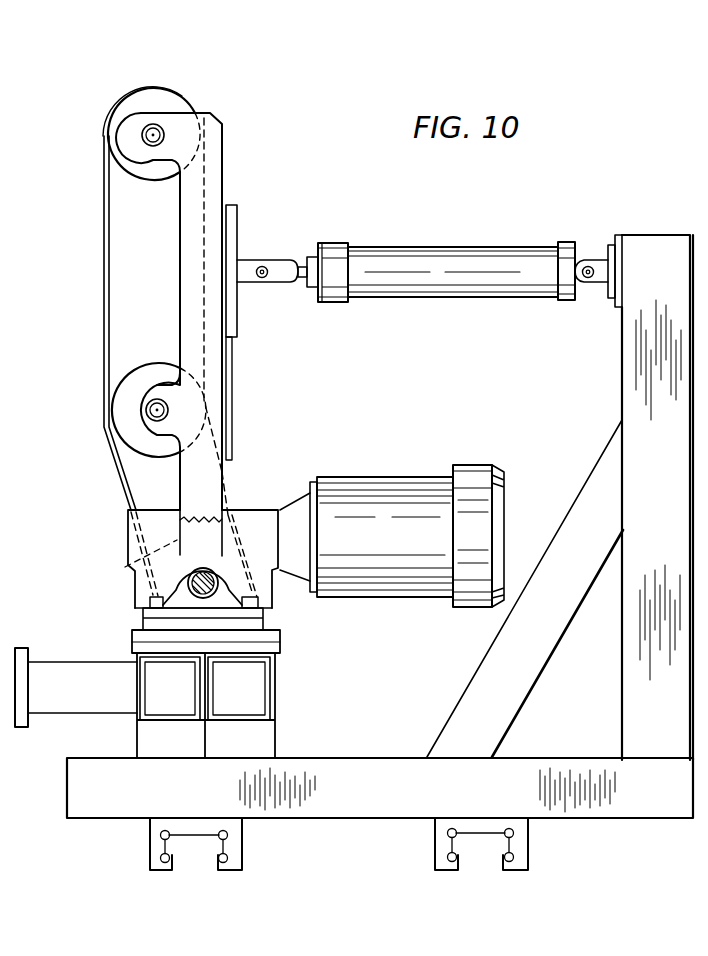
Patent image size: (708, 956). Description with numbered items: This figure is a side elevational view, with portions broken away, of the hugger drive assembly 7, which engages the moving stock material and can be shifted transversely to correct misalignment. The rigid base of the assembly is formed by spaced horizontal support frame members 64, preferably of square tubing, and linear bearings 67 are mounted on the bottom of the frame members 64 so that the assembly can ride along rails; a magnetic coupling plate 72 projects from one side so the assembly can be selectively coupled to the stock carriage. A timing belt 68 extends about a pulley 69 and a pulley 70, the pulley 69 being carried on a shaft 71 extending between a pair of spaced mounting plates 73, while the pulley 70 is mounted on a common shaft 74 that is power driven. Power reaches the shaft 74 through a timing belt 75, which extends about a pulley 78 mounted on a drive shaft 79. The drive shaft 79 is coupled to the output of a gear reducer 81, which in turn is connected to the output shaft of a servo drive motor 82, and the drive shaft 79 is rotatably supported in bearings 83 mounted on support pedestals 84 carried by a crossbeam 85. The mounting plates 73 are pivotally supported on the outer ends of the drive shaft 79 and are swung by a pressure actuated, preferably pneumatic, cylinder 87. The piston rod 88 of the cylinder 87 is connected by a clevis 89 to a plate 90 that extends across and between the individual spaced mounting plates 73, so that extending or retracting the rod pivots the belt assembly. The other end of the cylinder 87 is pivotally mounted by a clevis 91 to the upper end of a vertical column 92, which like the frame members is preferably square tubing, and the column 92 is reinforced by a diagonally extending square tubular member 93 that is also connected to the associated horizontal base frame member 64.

The hugger drive assembly 7 is at (328, 218).
The horizontal support frame member 64 is at (362, 800).
The linear bearing 67 is at (230, 847).
The timing belt 68 is at (103, 268).
The pulley 69 is at (127, 120).
The pulley 70 is at (130, 436).
The shaft 71 is at (160, 130).
The magnetic coupling plate 72 is at (22, 656).
The mounting plate 73 is at (214, 188).
The common shaft 74 is at (150, 407).
The timing belt 75 is at (124, 490).
The pulley 78 is at (133, 576).
The drive shaft 79 is at (213, 596).
The gear reducer 81 is at (158, 532).
The servo drive motor 82 is at (381, 522).
The bearing 83 is at (226, 585).
The support pedestal 84 is at (140, 635).
The crossbeam 85 is at (276, 682).
The pneumatic cylinder 87 is at (453, 268).
The piston rod 88 is at (300, 281).
The clevis 89 is at (282, 266).
The plate 90 is at (233, 325).
The clevis 91 is at (604, 266).
The vertical column 92 is at (662, 693).
The diagonally extending square tubular member 93 is at (520, 645).